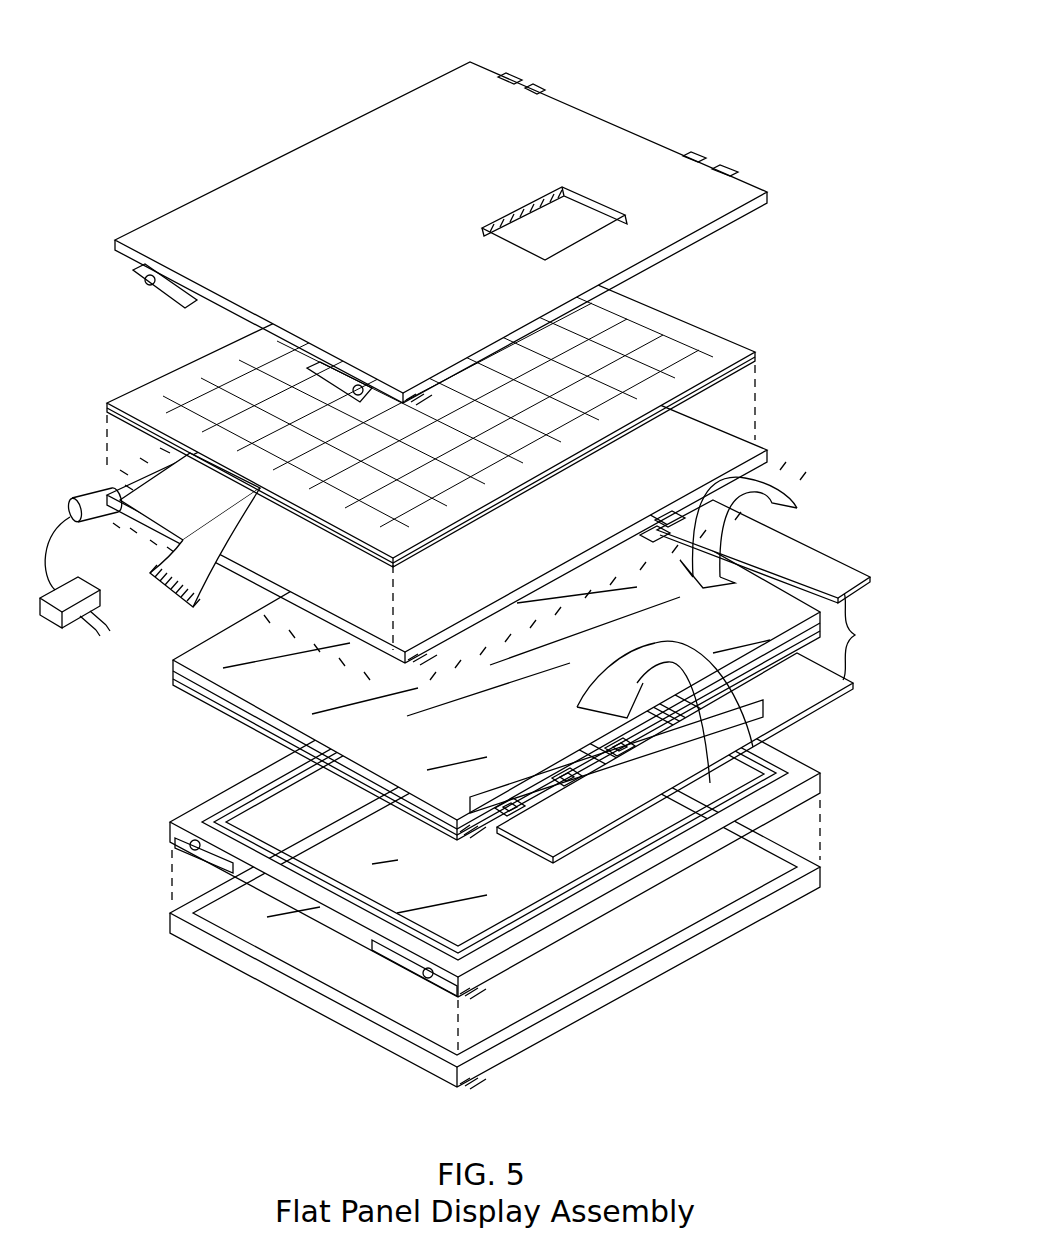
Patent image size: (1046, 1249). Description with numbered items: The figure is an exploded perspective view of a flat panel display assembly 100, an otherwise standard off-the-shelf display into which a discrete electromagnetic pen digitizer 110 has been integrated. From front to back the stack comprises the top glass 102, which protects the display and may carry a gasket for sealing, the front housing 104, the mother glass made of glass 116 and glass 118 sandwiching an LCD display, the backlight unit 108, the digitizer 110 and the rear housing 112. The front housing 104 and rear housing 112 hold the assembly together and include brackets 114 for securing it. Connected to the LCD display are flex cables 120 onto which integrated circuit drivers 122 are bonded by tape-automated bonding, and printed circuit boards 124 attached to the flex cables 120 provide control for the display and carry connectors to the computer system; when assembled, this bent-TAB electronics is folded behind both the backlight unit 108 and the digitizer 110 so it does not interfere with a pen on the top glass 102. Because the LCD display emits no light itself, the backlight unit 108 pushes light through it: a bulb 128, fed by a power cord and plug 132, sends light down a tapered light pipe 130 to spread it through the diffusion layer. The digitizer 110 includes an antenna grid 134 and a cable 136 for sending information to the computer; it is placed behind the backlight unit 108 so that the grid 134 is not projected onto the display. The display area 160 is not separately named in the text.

The flat panel display assembly 100 is at (297, 87).
The top glass 102 is at (320, 985).
The front housing 104 is at (187, 813).
The backlight unit 108 is at (535, 535).
The electromagnetic pen digitizer 110 is at (202, 355).
The rear housing 112 is at (240, 195).
The brackets 114 is at (742, 170).
The glass 116 is at (175, 684).
The glass 118 is at (173, 661).
The flex cables 120 is at (458, 866).
The integrated circuit drivers 122 is at (503, 790).
The printed circuit boards 124 is at (777, 710).
The bulb 128 is at (105, 510).
The tapered light pipe 130 is at (133, 480).
The power cord and plug 132 is at (87, 598).
The antenna grid 134 is at (210, 390).
The cable 136 is at (238, 512).
The display area 160 is at (343, 698).